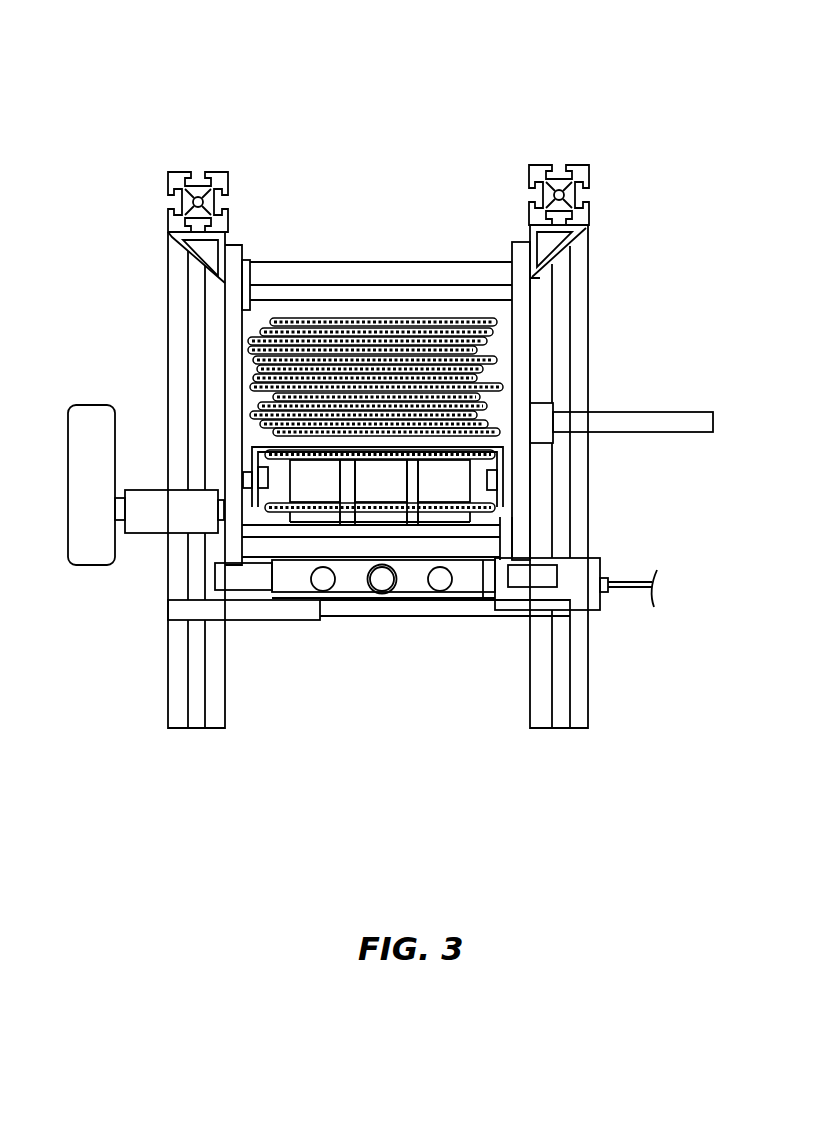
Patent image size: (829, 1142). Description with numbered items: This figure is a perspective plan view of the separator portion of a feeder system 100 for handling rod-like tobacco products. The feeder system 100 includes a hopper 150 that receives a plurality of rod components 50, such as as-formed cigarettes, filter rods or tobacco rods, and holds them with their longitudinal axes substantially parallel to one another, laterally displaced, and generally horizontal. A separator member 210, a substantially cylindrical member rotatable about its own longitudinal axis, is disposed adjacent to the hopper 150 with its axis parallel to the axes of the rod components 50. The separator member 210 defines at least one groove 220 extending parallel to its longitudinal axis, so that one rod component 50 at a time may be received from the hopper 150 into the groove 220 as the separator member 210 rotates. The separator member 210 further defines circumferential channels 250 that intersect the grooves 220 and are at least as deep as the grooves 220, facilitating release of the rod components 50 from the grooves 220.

The feeder system 100 is at (243, 133).
The rod components 50 is at (258, 364).
The hopper 150 is at (523, 327).
The separator member 210 is at (382, 480).
The groove 220 is at (290, 500).
The channel 250 is at (347, 472).